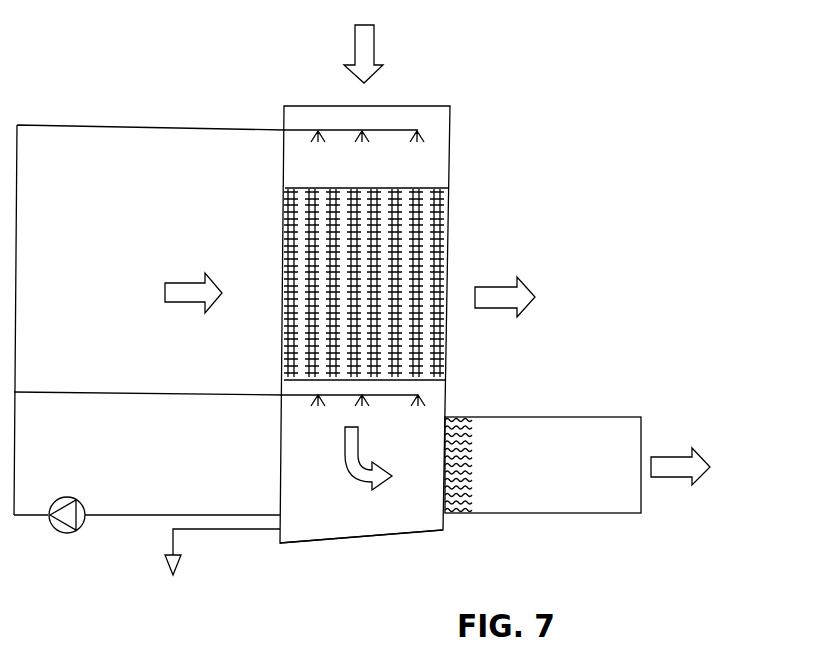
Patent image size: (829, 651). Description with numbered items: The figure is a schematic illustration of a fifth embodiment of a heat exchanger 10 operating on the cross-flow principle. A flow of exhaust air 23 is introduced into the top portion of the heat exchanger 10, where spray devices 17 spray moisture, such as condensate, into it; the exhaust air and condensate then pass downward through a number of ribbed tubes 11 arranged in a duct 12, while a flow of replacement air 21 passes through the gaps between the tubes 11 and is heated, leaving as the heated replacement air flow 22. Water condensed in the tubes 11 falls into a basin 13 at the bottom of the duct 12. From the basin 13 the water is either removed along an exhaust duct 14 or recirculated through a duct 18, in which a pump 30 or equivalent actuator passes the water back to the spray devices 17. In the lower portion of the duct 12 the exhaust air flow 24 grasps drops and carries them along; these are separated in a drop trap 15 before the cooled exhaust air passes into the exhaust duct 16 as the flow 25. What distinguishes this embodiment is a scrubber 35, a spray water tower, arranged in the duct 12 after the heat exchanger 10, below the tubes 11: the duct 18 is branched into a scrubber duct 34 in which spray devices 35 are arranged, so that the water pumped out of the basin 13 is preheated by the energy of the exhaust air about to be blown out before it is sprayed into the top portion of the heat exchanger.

The heat exchanger 10 is at (522, 209).
The ribbed tubes 11 is at (446, 237).
The duct 12 is at (446, 178).
The basin 13 is at (328, 533).
The exhaust duct 14 is at (217, 532).
The drop trap 15 is at (447, 416).
The exhaust duct 16 is at (575, 425).
The spray devices 17 is at (360, 131).
The duct 18 is at (118, 515).
The replacement air flow 21 is at (185, 288).
The heated replacement air flow 22 is at (530, 290).
The exhaust air flow 23 is at (370, 40).
The exhaust air flow 24 is at (358, 473).
The exhaust air flow 25 is at (670, 460).
The pump 30 is at (62, 533).
The scrubber duct 34 is at (175, 395).
The scrubber 35 is at (318, 404).